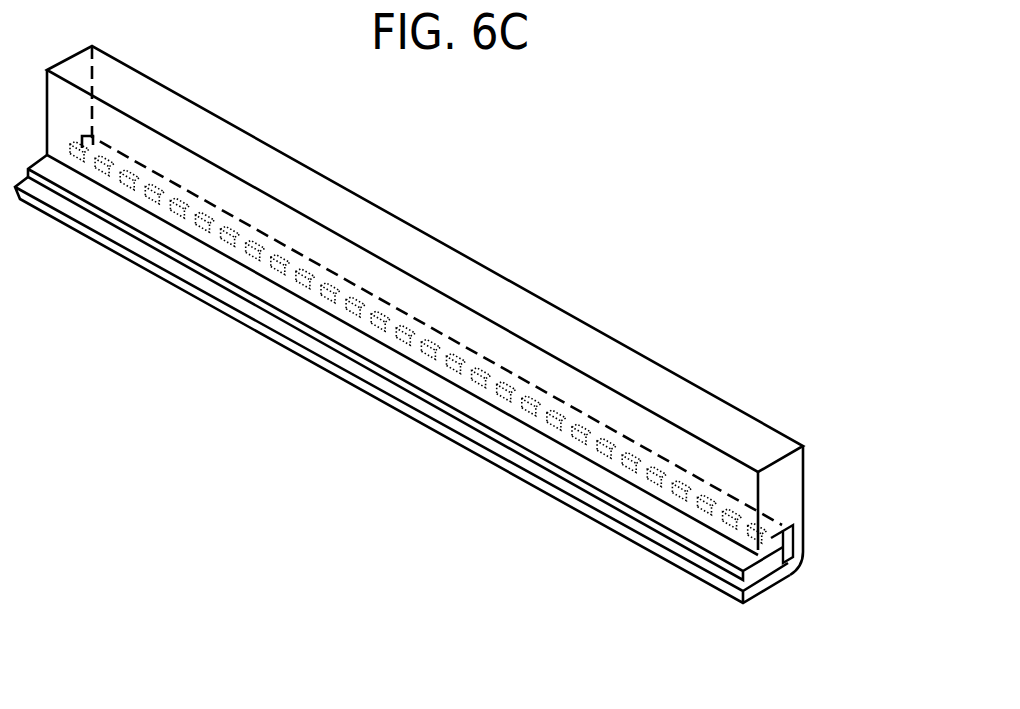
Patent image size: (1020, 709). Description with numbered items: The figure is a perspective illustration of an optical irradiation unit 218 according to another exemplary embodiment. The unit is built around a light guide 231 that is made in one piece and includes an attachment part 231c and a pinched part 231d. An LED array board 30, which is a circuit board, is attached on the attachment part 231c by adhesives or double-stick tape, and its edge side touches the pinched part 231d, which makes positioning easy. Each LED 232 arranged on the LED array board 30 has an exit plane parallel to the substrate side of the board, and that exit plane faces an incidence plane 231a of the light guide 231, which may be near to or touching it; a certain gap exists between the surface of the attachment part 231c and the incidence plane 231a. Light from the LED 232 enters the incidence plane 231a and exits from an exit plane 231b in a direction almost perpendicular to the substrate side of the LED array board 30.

The optical irradiation unit 218 is at (549, 220).
The light guide 231 is at (812, 426).
The incidence plane 231a is at (778, 524).
The exit plane 231b is at (578, 326).
The attachment part 231c is at (767, 582).
The pinched part 231d is at (800, 546).
The LED array board 30 is at (525, 444).
The LED 232 is at (373, 340).